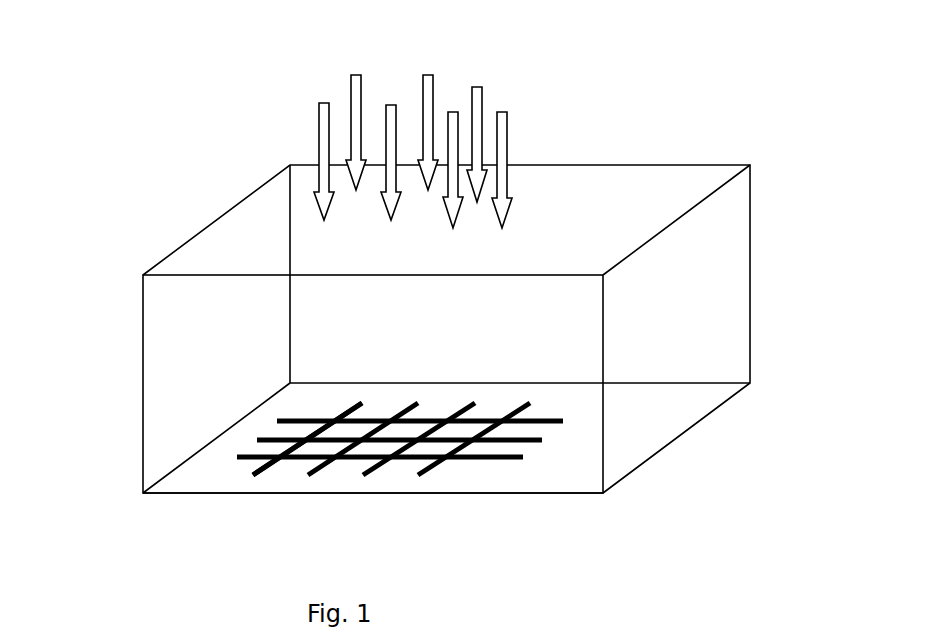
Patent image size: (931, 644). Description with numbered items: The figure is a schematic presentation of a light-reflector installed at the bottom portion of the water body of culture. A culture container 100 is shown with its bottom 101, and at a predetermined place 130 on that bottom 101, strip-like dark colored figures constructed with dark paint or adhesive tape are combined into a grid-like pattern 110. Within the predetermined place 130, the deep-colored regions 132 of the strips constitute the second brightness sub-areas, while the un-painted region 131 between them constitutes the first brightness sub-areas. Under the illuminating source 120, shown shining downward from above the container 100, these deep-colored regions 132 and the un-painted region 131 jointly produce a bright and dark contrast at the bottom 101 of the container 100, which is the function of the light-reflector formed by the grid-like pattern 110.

The container 100 is at (207, 225).
The bottom 101 is at (198, 473).
The grid-like pattern 110 is at (270, 468).
The illuminating source 120 is at (390, 107).
The predetermined place 130 is at (530, 421).
The un-painted region 131 is at (560, 418).
The deep-colored regions 132 is at (517, 443).